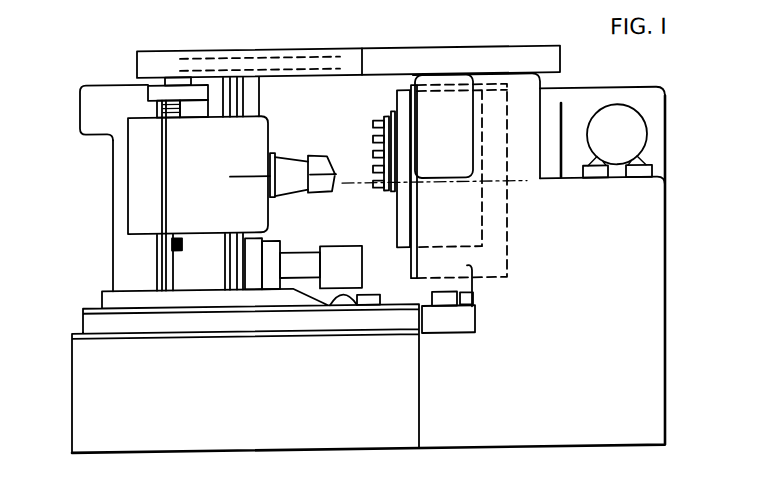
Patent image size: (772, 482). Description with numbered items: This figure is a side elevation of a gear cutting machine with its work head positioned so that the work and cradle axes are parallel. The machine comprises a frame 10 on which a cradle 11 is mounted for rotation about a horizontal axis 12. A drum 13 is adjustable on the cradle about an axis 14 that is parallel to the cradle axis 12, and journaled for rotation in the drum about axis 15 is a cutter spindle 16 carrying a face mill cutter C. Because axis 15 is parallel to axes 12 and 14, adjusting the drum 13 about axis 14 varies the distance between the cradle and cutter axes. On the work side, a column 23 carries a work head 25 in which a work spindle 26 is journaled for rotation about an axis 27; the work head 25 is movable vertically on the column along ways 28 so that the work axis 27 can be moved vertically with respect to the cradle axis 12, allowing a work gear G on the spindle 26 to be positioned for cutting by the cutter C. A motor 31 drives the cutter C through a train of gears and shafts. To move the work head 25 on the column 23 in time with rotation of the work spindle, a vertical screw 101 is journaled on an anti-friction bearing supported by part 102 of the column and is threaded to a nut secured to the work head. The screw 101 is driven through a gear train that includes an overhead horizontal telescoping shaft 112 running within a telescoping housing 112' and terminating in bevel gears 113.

The frame 10 is at (381, 427).
The cradle 11 is at (508, 276).
The horizontal axis 12 is at (520, 185).
The drum 13 is at (405, 218).
The axis 14 is at (418, 171).
The axis 15 is at (400, 158).
The cutter spindle 16 is at (397, 152).
The column 23 is at (125, 255).
The work head 25 is at (224, 209).
The work spindle 26 is at (275, 151).
The axis 27 is at (303, 173).
The ways 28 is at (242, 273).
The motor 31 is at (632, 135).
The vertical screw 101 is at (157, 100).
The part of the column 102 is at (160, 85).
The overhead horizontal telescoping shaft 112 is at (348, 43).
The telescoping housing 112' is at (371, 42).
The bevel gears 113 is at (173, 63).
The face mill cutter C is at (372, 127).
The work gear G is at (316, 187).